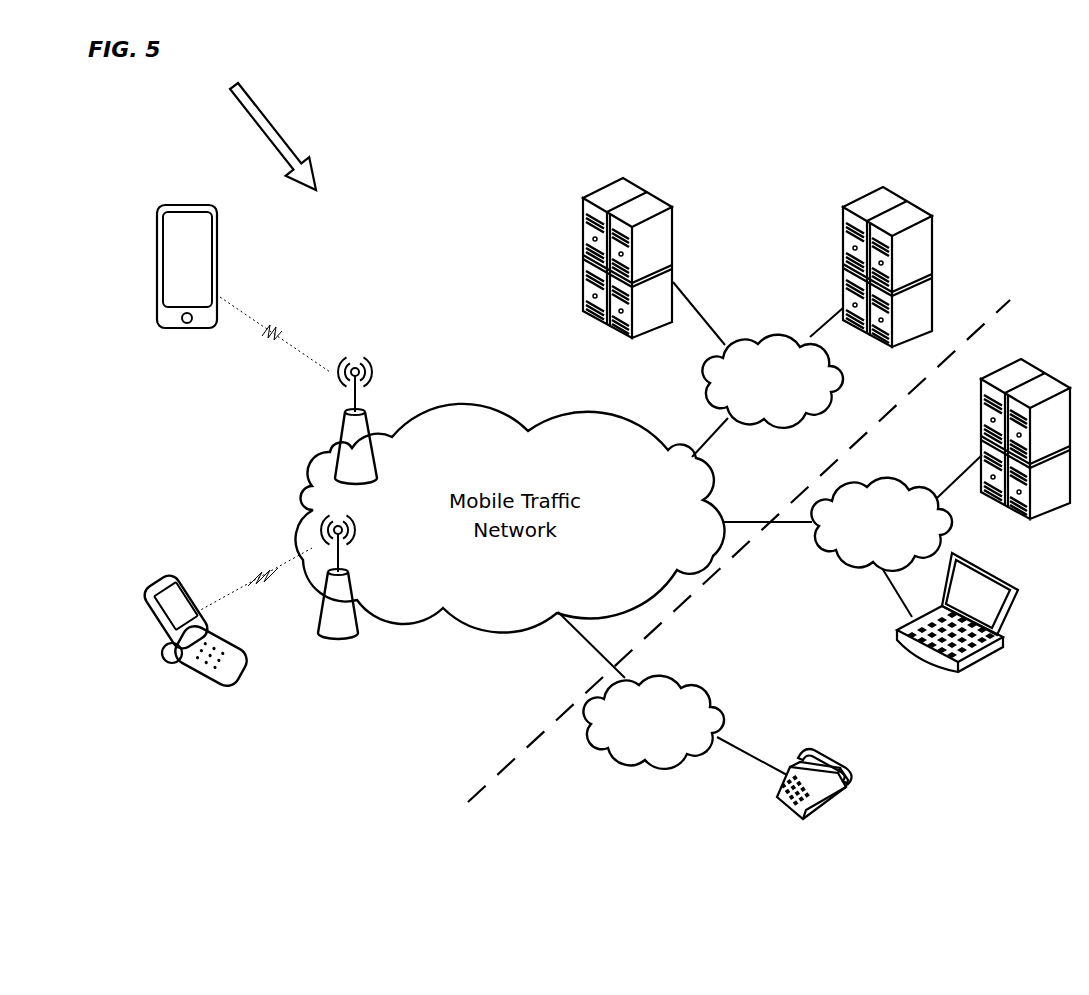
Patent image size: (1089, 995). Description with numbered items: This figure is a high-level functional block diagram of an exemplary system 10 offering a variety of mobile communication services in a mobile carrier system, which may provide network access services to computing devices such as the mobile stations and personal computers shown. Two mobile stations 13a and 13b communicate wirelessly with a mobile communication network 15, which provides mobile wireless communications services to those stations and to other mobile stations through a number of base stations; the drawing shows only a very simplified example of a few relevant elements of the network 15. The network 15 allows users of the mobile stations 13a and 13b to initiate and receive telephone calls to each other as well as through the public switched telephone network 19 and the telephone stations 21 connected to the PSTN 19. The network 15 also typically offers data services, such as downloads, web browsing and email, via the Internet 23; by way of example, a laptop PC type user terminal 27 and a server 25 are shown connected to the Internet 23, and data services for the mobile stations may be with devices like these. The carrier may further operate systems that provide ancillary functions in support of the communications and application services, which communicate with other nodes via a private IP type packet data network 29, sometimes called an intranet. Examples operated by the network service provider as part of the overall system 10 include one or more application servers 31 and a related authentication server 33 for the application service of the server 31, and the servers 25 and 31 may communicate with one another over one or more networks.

The system 10 is at (263, 130).
The mobile station 13a is at (138, 608).
The mobile station 13b is at (157, 248).
The mobile communication network 15 is at (353, 420).
The public switched telephone network 19 is at (720, 707).
The telephone station 21 is at (776, 803).
The Internet 23 is at (820, 567).
The server 25 is at (981, 443).
The laptop PC type user terminal 27 is at (923, 660).
The private IP type packet data network 29 is at (843, 392).
The application server 31 is at (675, 218).
The authentication server 33 is at (934, 271).